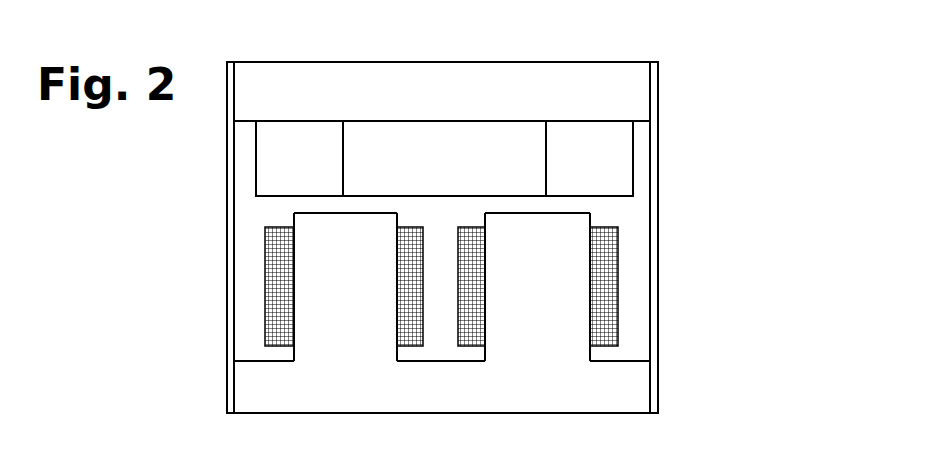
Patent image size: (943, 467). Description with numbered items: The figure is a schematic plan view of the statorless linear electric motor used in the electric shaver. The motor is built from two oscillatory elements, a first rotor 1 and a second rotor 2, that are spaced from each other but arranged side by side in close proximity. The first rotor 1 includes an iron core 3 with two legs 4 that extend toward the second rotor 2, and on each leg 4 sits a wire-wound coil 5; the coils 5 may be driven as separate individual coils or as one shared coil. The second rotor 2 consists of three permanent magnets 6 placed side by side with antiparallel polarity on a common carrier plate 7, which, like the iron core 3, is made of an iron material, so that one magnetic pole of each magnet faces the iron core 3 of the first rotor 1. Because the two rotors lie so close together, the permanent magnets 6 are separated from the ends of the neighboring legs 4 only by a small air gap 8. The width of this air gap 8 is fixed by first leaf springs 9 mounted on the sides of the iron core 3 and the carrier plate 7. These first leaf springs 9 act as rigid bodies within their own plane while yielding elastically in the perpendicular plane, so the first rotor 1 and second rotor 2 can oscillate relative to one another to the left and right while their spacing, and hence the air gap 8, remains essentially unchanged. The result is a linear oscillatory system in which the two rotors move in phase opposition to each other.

The first rotor 1 is at (681, 283).
The second rotor 2 is at (678, 118).
The iron core 3 is at (633, 377).
The leg 4 is at (542, 343).
The coil 5 is at (613, 322).
The permanent magnet 6 is at (633, 181).
The carrier plate 7 is at (545, 78).
The air gap 8 is at (582, 205).
The first leaf spring 9 is at (655, 232).